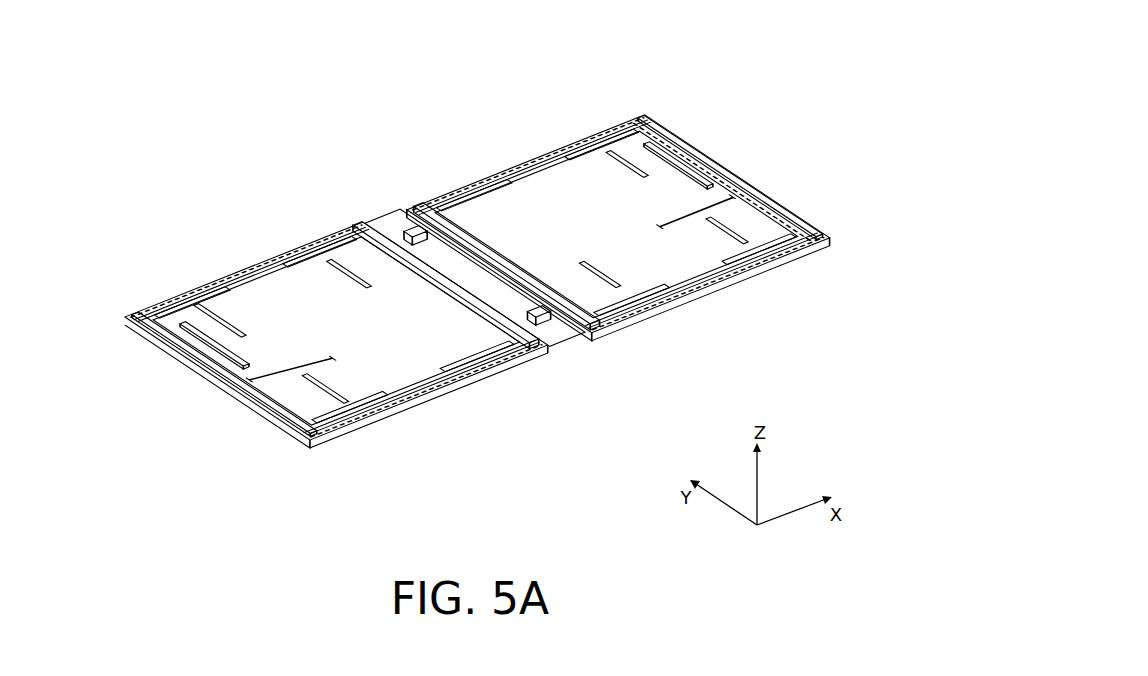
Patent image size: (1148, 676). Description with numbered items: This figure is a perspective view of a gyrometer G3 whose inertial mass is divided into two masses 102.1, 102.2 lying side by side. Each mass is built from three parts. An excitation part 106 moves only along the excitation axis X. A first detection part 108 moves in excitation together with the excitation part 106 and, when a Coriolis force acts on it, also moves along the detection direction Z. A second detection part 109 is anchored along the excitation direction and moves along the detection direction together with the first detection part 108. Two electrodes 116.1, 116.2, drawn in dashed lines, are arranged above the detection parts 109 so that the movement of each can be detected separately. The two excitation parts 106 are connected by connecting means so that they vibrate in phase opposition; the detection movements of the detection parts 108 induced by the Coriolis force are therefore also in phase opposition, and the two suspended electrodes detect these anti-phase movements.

The mass 102.1 is at (170, 282).
The mass 102.2 is at (597, 121).
The excitation part 106 is at (243, 393).
The first detection part 108 is at (233, 347).
The second detection part 109 is at (548, 162).
The electrode 116.1 is at (803, 253).
The electrode 116.2 is at (352, 422).
The gyrometer G3 is at (358, 186).